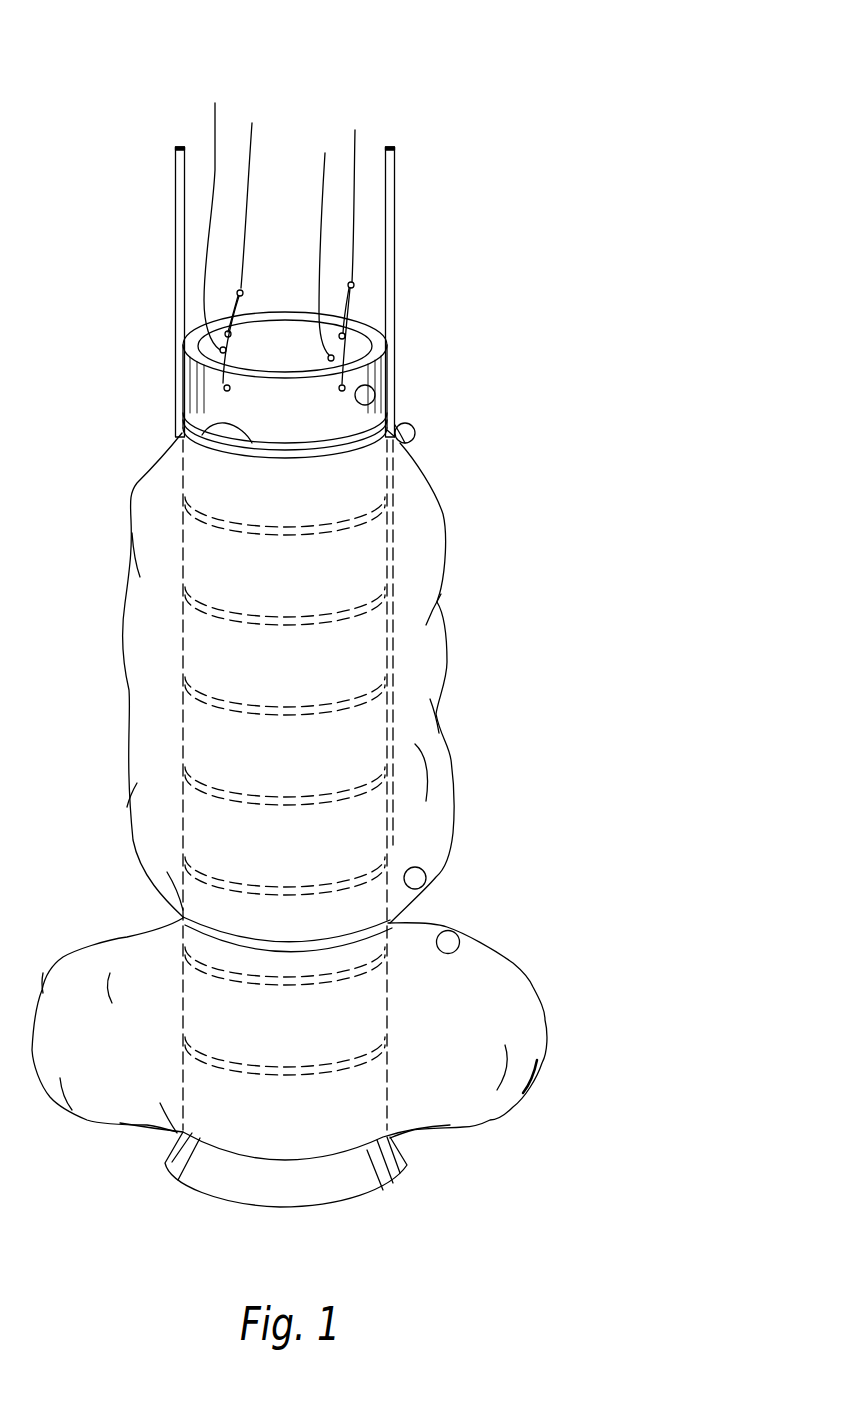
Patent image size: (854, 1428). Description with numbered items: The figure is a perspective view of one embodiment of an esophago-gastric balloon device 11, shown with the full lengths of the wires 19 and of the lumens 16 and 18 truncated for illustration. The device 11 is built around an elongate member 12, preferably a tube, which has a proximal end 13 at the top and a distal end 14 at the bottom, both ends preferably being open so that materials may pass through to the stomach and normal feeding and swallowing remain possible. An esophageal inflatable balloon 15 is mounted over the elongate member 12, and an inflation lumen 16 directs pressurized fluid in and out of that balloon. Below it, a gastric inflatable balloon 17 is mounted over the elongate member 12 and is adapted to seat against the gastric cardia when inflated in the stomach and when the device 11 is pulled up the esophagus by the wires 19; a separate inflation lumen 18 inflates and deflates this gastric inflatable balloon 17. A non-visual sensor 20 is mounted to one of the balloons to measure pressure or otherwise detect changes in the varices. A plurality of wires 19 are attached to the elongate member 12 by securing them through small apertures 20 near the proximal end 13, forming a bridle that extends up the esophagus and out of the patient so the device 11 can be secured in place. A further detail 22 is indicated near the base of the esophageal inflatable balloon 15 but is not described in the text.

The esophago-gastric balloon device 11 is at (432, 87).
The elongate member 12 is at (416, 437).
The proximal end 13 is at (290, 300).
The distal end 14 is at (285, 1225).
The esophageal inflatable balloon 15 is at (131, 507).
The inflation lumen 16 is at (175, 228).
The gastric inflatable balloon 17 is at (521, 976).
The separate inflation lumen 18 is at (395, 228).
The wires 19 is at (214, 135).
The non-visual sensor 20 is at (375, 394).
The bag fold 22 is at (180, 437).